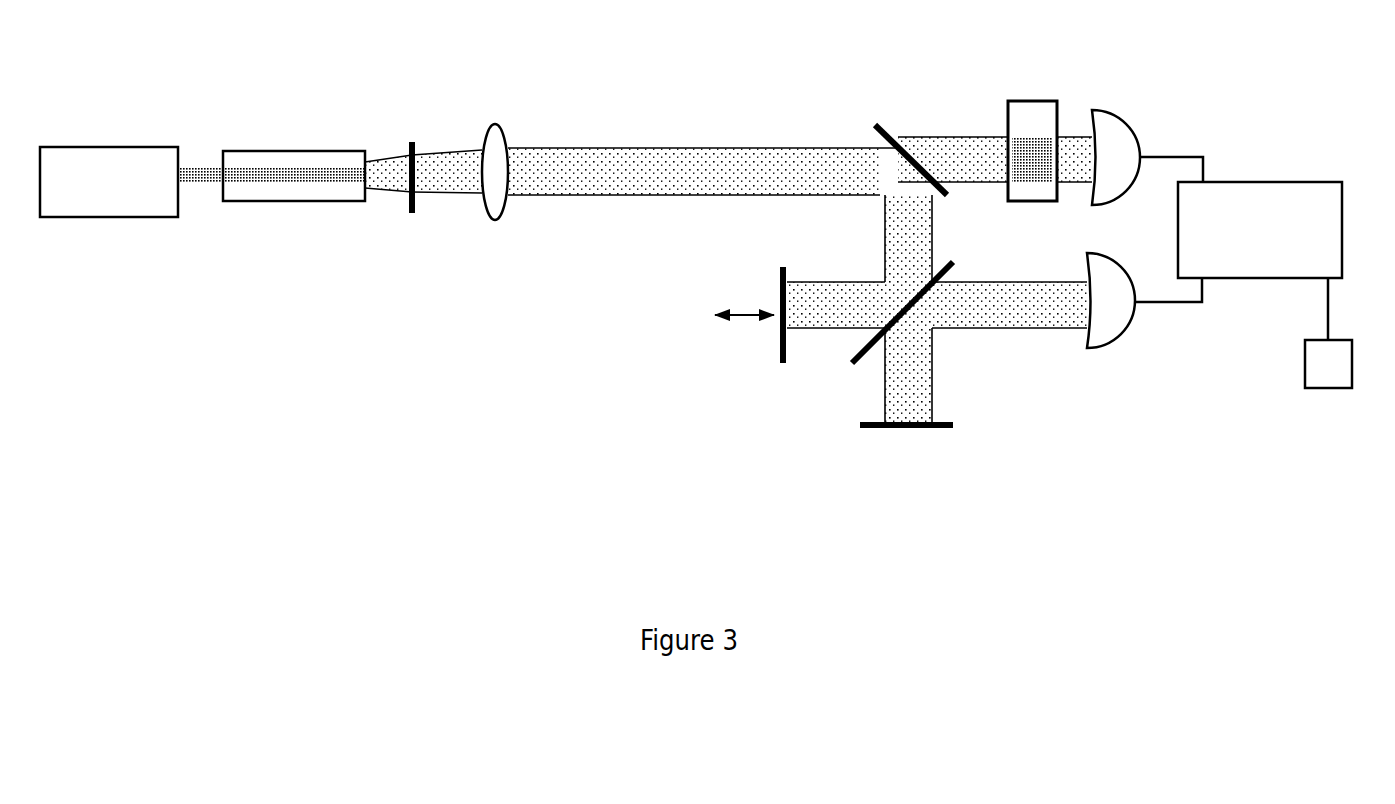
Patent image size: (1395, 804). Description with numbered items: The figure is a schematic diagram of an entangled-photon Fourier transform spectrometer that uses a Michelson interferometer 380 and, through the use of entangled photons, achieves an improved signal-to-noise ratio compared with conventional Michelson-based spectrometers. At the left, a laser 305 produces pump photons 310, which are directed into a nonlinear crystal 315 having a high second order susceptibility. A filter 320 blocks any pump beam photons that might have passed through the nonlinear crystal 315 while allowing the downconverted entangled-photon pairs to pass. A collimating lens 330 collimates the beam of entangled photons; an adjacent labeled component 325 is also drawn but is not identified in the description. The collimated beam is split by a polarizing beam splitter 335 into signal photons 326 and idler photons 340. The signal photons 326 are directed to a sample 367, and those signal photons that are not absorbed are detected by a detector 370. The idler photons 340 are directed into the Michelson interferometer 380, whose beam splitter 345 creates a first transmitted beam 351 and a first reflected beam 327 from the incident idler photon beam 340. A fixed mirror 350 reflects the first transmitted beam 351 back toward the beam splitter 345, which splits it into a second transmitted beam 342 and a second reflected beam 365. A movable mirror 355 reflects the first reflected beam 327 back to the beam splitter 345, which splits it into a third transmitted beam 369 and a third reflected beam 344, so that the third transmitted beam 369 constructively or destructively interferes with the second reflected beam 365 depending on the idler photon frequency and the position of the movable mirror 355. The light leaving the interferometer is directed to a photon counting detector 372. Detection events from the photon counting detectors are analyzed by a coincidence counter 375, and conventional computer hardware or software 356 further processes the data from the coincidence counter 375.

The laser 305 is at (113, 228).
The pump photons 310 is at (205, 162).
The nonlinear crystal 315 is at (280, 140).
The filter 320 is at (404, 138).
The collimating lens 325 is at (463, 135).
The signal photons 326 is at (952, 137).
The first reflected beam 327 is at (820, 333).
The collimating lens 330 is at (511, 140).
The polarizing beam splitter 335 is at (873, 118).
The idler photons 340 is at (866, 359).
The second transmitted beam 342 is at (866, 359).
The third reflected beam 344 is at (866, 359).
The beam splitter 345 is at (961, 253).
The fixed mirror 350 is at (908, 440).
The first transmitted beam 351 is at (943, 390).
The movable mirror 355 is at (777, 350).
The conventional computer hardware or software 356 is at (1325, 392).
The second reflected beam 365 is at (1159, 353).
The sample 367 is at (1063, 130).
The third transmitted beam 369 is at (1159, 353).
The detector 370 is at (1143, 148).
The photon counting detector 372 is at (1148, 346).
The coincidence counter 375 is at (1319, 180).
The Michelson interferometer 380 is at (784, 456).